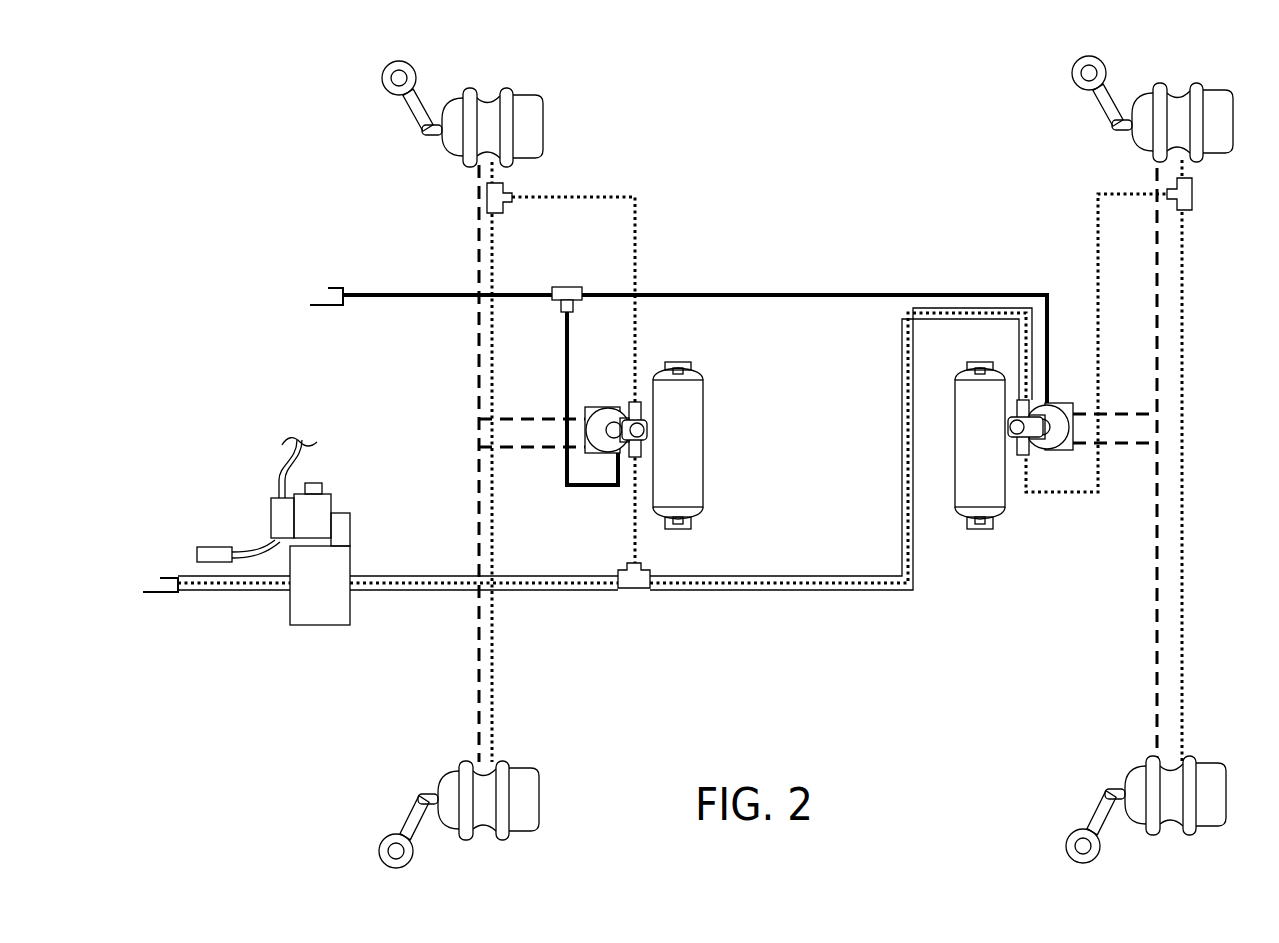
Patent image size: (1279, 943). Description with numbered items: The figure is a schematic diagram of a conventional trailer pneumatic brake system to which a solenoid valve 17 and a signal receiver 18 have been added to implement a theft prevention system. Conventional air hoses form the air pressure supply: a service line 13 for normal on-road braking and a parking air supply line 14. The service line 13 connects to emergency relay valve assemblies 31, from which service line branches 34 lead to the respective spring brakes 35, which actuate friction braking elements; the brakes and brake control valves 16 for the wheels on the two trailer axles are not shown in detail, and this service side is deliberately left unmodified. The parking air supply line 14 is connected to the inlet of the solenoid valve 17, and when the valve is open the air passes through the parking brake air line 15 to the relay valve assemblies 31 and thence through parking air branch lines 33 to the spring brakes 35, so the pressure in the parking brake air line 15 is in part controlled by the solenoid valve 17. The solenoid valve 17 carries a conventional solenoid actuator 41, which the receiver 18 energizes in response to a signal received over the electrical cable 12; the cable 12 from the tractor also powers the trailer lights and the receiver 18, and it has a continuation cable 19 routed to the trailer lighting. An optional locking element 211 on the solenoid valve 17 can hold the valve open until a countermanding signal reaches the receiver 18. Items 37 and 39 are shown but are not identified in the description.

The electrical cable 12 is at (250, 547).
The service air supply line 13 is at (428, 295).
The parking air supply line 14 is at (237, 589).
The parking brake air line 15 is at (497, 577).
The brakes and brake control valves 16 is at (837, 452).
The solenoid valve 17 is at (342, 607).
The signal receiver 18 is at (272, 520).
The continuation cable 19 is at (288, 462).
The locking element 211 is at (343, 530).
The emergency relay valve assemblies 31 is at (595, 410).
The parking air branch lines 33 is at (637, 218).
The service line branches 34 is at (1152, 322).
The spring brakes 35 is at (532, 122).
The slack adjuster 37 is at (408, 100).
The air reservoir 39 is at (692, 412).
The solenoid actuator 41 is at (323, 508).